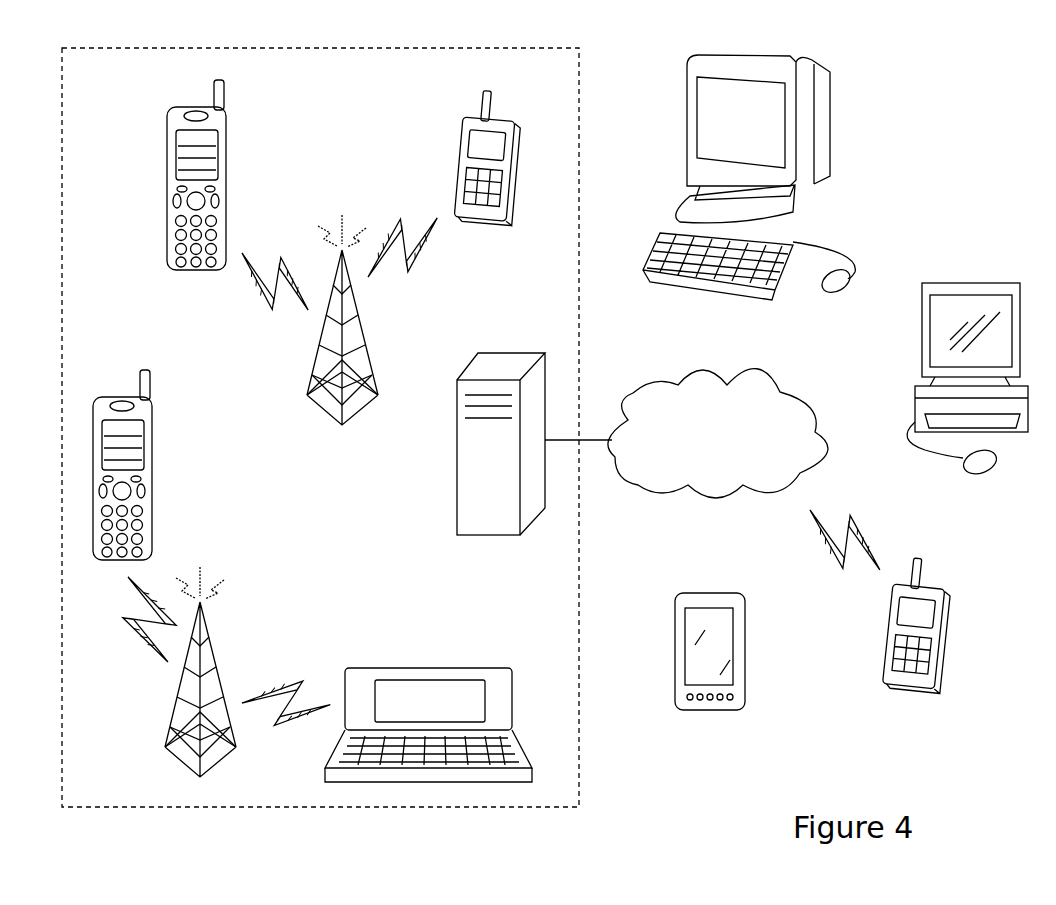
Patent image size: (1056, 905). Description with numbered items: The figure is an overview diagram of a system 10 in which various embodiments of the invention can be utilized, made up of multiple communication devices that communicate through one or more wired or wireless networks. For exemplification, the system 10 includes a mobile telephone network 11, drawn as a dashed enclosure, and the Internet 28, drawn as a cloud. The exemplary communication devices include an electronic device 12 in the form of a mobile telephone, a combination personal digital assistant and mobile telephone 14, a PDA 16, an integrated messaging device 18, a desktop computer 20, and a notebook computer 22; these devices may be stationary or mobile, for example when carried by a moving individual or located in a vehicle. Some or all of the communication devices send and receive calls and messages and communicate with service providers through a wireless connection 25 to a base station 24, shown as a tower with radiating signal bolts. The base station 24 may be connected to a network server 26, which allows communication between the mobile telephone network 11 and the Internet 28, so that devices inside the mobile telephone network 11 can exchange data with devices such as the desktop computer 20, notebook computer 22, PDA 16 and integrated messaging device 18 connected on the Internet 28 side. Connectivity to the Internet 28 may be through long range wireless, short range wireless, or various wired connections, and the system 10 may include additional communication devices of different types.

The system 10 is at (1013, 541).
The mobile telephone network 11 is at (101, 92).
The electronic device 12 is at (226, 187).
The combination personal digital assistant (PDA) and mobile telephone 14 is at (428, 672).
The PDA 16 is at (745, 650).
The integrated messaging device (IMD) 18 is at (462, 165).
The desktop computer 20 is at (830, 110).
The notebook computer 22 is at (985, 282).
The base station 24 is at (360, 325).
The wireless connection 25 is at (156, 652).
The network server 26 is at (457, 457).
The Internet 28 is at (753, 369).